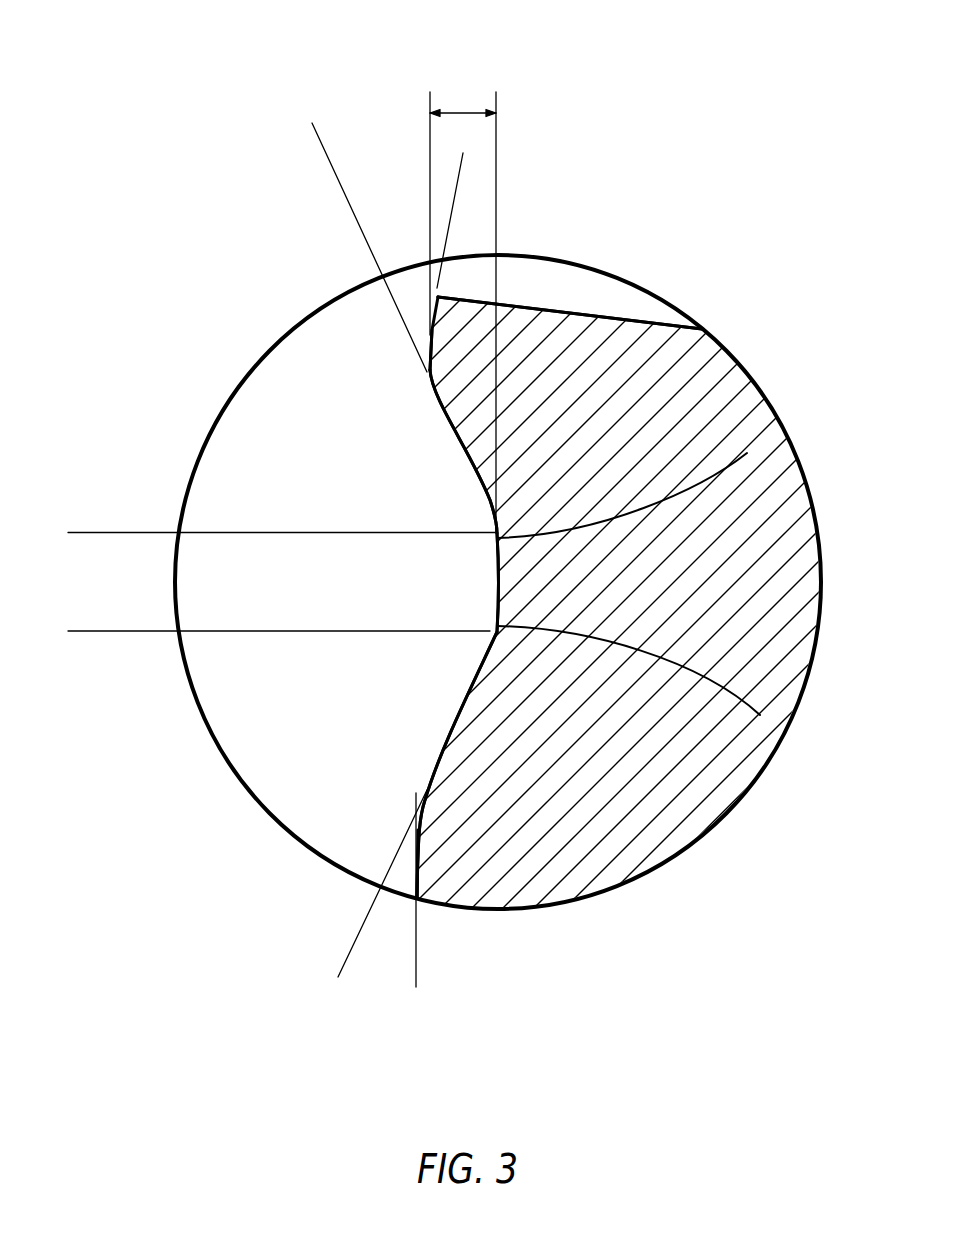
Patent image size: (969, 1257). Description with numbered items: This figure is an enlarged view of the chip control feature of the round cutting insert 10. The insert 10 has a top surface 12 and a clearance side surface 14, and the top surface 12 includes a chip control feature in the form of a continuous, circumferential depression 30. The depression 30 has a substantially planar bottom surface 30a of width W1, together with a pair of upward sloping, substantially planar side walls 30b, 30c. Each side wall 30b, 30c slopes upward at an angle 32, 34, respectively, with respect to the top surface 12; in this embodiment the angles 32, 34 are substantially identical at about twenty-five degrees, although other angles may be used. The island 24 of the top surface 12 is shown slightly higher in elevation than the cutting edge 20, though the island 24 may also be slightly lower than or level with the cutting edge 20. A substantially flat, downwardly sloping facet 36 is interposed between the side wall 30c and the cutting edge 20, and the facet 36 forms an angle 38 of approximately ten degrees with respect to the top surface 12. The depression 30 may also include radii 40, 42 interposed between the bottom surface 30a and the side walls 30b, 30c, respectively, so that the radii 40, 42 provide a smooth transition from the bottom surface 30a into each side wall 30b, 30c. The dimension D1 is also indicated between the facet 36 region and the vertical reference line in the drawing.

The round cutting insert 10 is at (175, 88).
The top surface 12 is at (418, 320).
The clearance side surface 14 is at (578, 297).
The cutting edge 20 is at (431, 316).
The island 24 is at (407, 869).
The depression 30 is at (262, 705).
The bottom surface 30a is at (495, 593).
The side wall 30b is at (452, 722).
The side wall 30c is at (457, 427).
The angle 32 is at (413, 972).
The angle 34 is at (428, 113).
The facet 36 is at (430, 355).
The angle 38 is at (380, 173).
The radius 40 is at (760, 715).
The radius 42 is at (747, 453).
The offset distance D1 is at (463, 112).
The width W1 is at (95, 533).